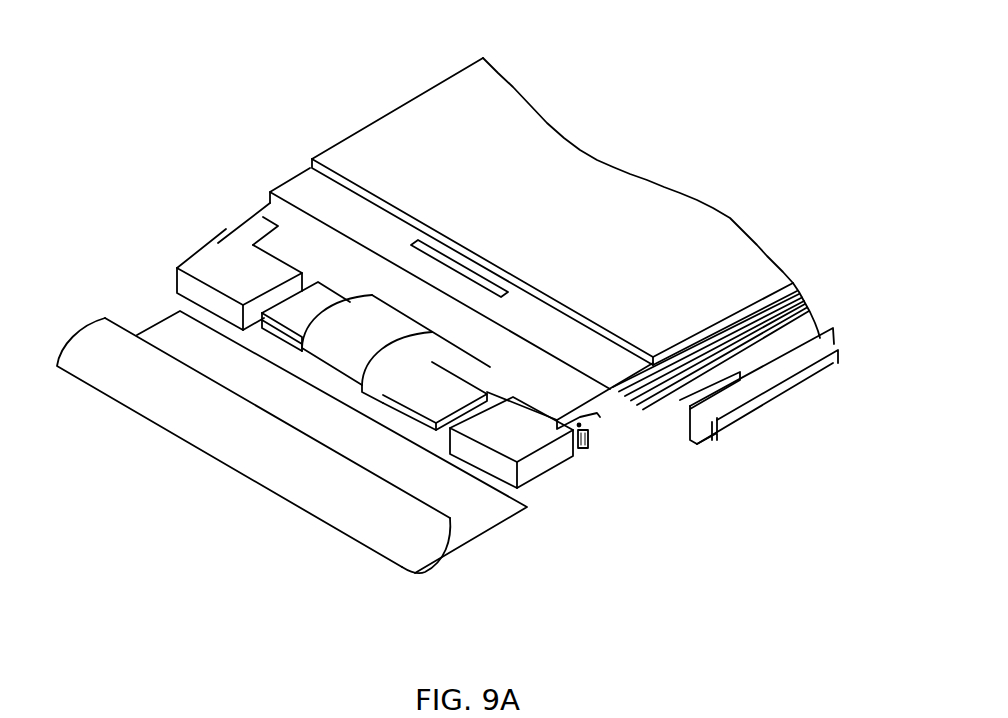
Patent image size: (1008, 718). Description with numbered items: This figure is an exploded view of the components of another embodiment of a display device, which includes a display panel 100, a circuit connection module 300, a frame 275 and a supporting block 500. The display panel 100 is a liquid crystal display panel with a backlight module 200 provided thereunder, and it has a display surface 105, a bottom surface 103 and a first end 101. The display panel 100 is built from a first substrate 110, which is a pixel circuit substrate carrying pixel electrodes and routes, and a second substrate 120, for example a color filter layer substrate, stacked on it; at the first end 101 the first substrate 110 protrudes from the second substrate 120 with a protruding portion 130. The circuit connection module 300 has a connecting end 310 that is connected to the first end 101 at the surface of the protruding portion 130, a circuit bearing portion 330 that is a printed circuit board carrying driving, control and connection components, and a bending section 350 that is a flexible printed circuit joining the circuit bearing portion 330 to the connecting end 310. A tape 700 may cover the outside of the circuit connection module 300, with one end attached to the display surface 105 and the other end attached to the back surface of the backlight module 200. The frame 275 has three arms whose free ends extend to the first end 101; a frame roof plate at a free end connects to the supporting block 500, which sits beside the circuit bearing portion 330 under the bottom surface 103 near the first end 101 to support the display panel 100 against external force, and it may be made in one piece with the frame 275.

The display panel 100 is at (870, 224).
The first end 101 is at (266, 196).
The bottom surface 103 is at (610, 413).
The display surface 105 is at (490, 118).
The first substrate 110 is at (801, 294).
The second substrate 120 is at (794, 282).
The protruding portion 130 is at (630, 390).
The backlight module 200 is at (824, 330).
The frame 275 is at (240, 228).
The circuit connection module 300 is at (258, 30).
The connecting end 310 is at (388, 315).
The circuit bearing portion 330 is at (313, 303).
The bending section 350 is at (345, 340).
The supporting block 500 is at (527, 432).
The tape 700 is at (333, 495).